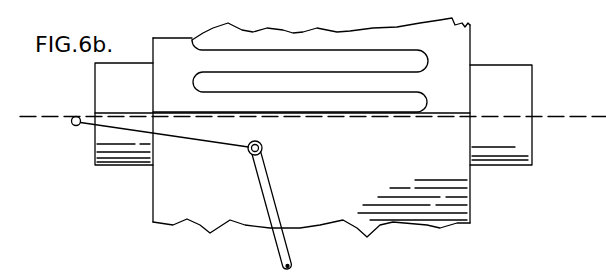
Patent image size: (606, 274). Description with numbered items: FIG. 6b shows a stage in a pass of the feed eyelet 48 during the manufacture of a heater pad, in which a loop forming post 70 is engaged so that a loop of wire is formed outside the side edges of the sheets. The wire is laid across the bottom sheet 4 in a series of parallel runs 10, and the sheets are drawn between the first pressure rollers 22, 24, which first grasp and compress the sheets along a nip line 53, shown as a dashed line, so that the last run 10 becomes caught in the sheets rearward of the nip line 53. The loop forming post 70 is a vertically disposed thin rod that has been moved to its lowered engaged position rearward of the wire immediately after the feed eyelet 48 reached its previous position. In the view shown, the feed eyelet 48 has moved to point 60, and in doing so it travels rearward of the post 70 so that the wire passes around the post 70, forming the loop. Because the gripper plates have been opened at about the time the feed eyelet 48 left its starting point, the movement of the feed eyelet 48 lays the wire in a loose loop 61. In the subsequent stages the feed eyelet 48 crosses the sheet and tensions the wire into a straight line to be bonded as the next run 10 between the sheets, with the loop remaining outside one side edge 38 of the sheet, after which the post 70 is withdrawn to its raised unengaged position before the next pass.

The bottom sheet 4 is at (458, 148).
The run 10 is at (292, 113).
The first pressure roller 22 is at (533, 157).
The first pressure roller 24 is at (258, 213).
The transverse side edge 38 is at (153, 45).
The feed eyelet 48 is at (262, 152).
The nip line 53 is at (485, 117).
The point 60 is at (287, 205).
The loose loop 61 is at (182, 138).
The loop forming post 70 is at (76, 116).